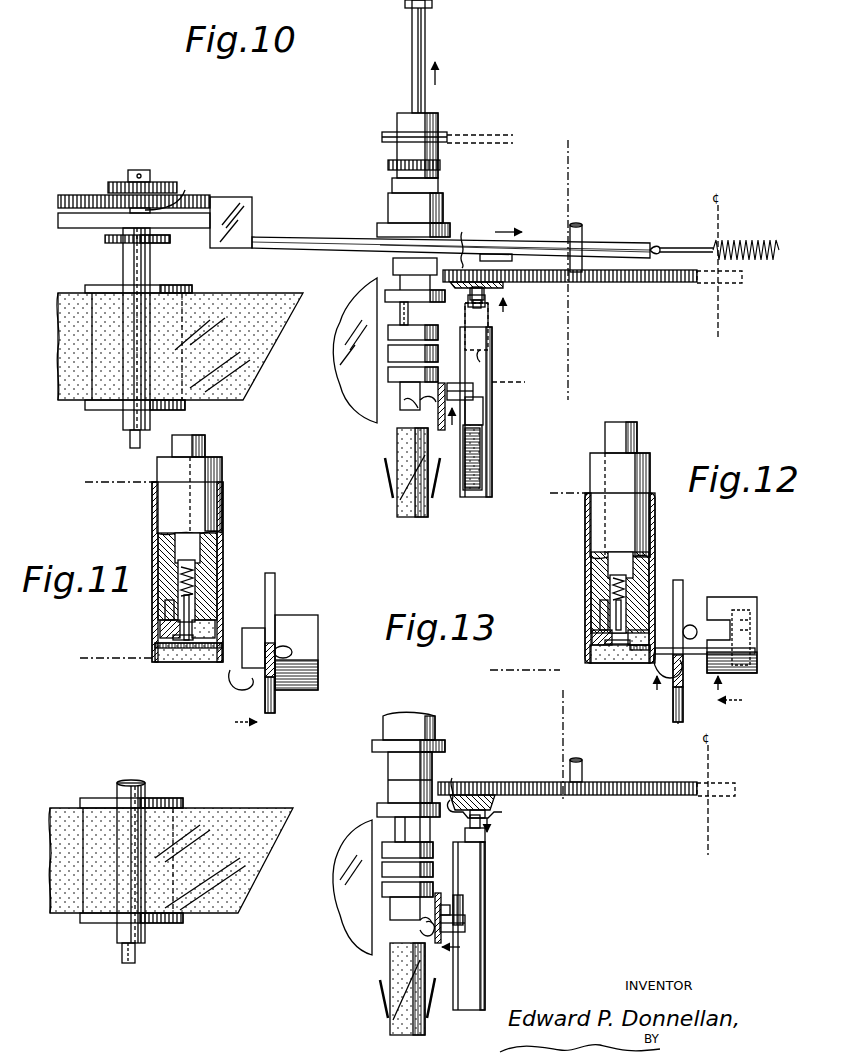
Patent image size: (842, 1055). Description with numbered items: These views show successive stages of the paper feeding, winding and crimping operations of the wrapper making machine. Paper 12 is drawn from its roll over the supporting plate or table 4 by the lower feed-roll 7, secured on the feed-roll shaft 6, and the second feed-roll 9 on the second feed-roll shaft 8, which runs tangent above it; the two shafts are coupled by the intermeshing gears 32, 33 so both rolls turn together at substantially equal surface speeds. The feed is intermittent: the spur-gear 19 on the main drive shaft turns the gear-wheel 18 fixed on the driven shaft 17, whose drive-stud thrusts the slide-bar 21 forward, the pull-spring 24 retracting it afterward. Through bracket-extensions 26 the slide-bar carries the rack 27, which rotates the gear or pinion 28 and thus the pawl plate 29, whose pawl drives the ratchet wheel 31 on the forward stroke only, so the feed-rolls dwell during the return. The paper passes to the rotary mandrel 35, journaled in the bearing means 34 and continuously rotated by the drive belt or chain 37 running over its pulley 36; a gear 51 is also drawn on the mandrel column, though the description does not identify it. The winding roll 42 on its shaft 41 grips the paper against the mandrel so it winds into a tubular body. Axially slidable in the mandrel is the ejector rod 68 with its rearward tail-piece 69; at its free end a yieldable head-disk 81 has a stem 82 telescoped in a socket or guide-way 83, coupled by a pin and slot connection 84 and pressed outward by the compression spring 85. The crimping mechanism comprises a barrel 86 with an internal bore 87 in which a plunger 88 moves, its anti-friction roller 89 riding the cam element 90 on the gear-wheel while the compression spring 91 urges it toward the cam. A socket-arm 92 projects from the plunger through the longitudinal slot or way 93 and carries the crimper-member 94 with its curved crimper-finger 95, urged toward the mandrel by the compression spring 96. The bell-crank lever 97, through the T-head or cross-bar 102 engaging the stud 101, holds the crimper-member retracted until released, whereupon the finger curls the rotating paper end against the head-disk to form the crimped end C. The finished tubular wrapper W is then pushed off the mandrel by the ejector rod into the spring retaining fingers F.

In FIG. 10, the supporting plate or table 4 is at (340, 385).
In FIG. 13, the supporting plate or table 4 is at (352, 853).
In FIG. 10, the feed-roll shaft 6 is at (198, 166).
In FIG. 10, the feed-roll 7 is at (108, 407).
In FIG. 13, the feed-roll 7 is at (170, 803).
In FIG. 10, the second feed-roll shaft 8 is at (130, 442).
In FIG. 10, the second feed-roll 9 is at (145, 272).
In FIG. 13, the second feed-roll 9 is at (145, 788).
In FIG. 10, the roll of paper 12 is at (240, 388).
In FIG. 11, the roll of paper 12 is at (223, 505).
In FIG. 12, the roll of paper 12 is at (620, 578).
In FIG. 13, the roll of paper 12 is at (205, 815).
In FIG. 10, the driven shaft 17 is at (582, 232).
In FIG. 13, the driven shaft 17 is at (582, 768).
In FIG. 10, the gear-wheel 18 is at (640, 278).
In FIG. 13, the gear-wheel 18 is at (615, 795).
In FIG. 10, the spur-gear 19 is at (725, 283).
In FIG. 13, the spur-gear 19 is at (720, 796).
In FIG. 10, the slide-bar 21 is at (315, 233).
In FIG. 10, the pull-spring 24 is at (748, 240).
In FIG. 10, the bracket-extensions 26 is at (240, 212).
In FIG. 10, the rack 27 is at (218, 187).
In FIG. 10, the gear or pinion 28 is at (170, 185).
In FIG. 10, the pawl plate 29 is at (100, 195).
In FIG. 10, the ratchet wheel 31 is at (122, 182).
In FIG. 10, the gear 32 is at (105, 238).
In FIG. 10, the gear 33 is at (158, 243).
In FIG. 10, the bearing means 34 is at (432, 210).
In FIG. 13, the bearing means 34 is at (432, 728).
In FIG. 10, the rotary mandrel 35 is at (430, 122).
In FIG. 11, the rotary mandrel 35 is at (222, 475).
In FIG. 12, the rotary mandrel 35 is at (650, 470).
In FIG. 13, the rotary mandrel 35 is at (425, 830).
In FIG. 10, the pulley 36 is at (380, 135).
In FIG. 10, the drive belt or chain 37 is at (492, 140).
In FIG. 10, the shaft 41 is at (410, 320).
In FIG. 10, the winding roll 42 is at (420, 338).
In FIG. 13, the winding roll 42 is at (395, 855).
In FIG. 10, the gear 51 is at (440, 165).
In FIG. 11, the ejector rod 68 is at (205, 445).
In FIG. 12, the ejector rod 68 is at (637, 432).
In FIG. 10, the tail-piece 69 is at (425, 40).
In FIG. 11, the head-disk 81 is at (190, 662).
In FIG. 12, the head-disk 81 is at (603, 660).
In FIG. 11, the stem 82 is at (215, 630).
In FIG. 12, the stem 82 is at (620, 637).
In FIG. 11, the socket or guide-way 83 is at (195, 590).
In FIG. 12, the socket or guide-way 83 is at (626, 590).
In FIG. 11, the pin and slot connection 84 is at (190, 605).
In FIG. 12, the pin and slot connection 84 is at (622, 610).
In FIG. 11, the compression spring 85 is at (168, 608).
In FIG. 12, the compression spring 85 is at (604, 612).
In FIG. 10, the barrel 86 is at (492, 398).
In FIG. 13, the barrel 86 is at (485, 888).
In FIG. 10, the internal bore 87 is at (485, 357).
In FIG. 10, the plunger 88 is at (485, 318).
In FIG. 13, the plunger 88 is at (482, 838).
In FIG. 10, the anti-friction roller 89 is at (467, 242).
In FIG. 13, the anti-friction roller 89 is at (459, 781).
In FIG. 10, the cam element 90 is at (490, 290).
In FIG. 13, the cam element 90 is at (475, 800).
In FIG. 10, the compression spring 91 is at (485, 455).
In FIG. 10, the socket-arm 92 is at (470, 385).
In FIG. 11, the socket-arm 92 is at (305, 622).
In FIG. 12, the socket-arm 92 is at (735, 605).
In FIG. 13, the socket-arm 92 is at (460, 925).
In FIG. 10, the longitudinal slot or way 93 is at (483, 415).
In FIG. 13, the longitudinal slot or way 93 is at (458, 905).
In FIG. 11, the crimper-member 94 is at (248, 645).
In FIG. 12, the crimper-member 94 is at (683, 600).
In FIG. 13, the crimper-member 94 is at (425, 920).
In FIG. 10, the crimper-finger 95 is at (418, 400).
In FIG. 11, the crimper-finger 95 is at (232, 690).
In FIG. 12, the crimper-finger 95 is at (655, 672).
In FIG. 13, the crimper-finger 95 is at (420, 932).
In FIG. 10, the compression spring 96 is at (521, 385).
In FIG. 12, the compression spring 96 is at (757, 622).
In FIG. 11, the bell-crank lever 97 is at (272, 690).
In FIG. 12, the bell-crank lever 97 is at (683, 680).
In FIG. 11, the stud 101 is at (290, 648).
In FIG. 12, the stud 101 is at (693, 626).
In FIG. 13, the stud 101 is at (450, 935).
In FIG. 10, the T-head or cross-bar 102 is at (442, 430).
In FIG. 11, the T-head or cross-bar 102 is at (293, 612).
In FIG. 12, the T-head or cross-bar 102 is at (673, 705).
In FIG. 13, the T-head or cross-bar 102 is at (438, 893).
In FIG. 10, the tubular wrapper W is at (400, 498).
In FIG. 13, the tubular wrapper W is at (395, 965).
In FIG. 10, the spring retaining fingers F is at (388, 482).
In FIG. 13, the spring retaining fingers F is at (383, 1005).
In FIG. 12, the crimped end C is at (565, 681).